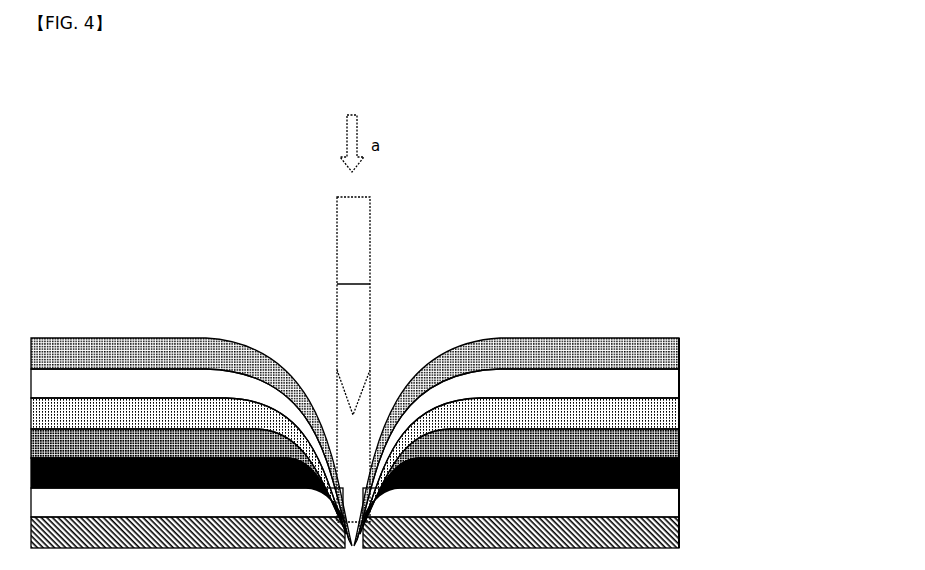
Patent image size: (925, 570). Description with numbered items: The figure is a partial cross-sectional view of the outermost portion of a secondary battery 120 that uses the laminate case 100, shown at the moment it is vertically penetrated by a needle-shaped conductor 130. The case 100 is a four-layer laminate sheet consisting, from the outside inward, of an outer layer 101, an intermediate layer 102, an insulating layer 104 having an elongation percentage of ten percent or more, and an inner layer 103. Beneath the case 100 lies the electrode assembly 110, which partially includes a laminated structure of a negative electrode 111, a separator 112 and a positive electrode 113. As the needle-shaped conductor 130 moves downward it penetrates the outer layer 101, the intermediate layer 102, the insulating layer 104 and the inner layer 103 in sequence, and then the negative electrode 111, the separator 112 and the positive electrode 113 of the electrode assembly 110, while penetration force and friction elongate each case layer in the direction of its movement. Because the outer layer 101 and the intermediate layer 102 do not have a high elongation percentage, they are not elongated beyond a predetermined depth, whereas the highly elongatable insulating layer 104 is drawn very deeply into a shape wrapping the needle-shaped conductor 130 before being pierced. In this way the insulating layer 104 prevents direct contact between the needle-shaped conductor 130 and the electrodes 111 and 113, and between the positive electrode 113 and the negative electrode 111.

The case 100 is at (432, 442).
The outer layer 101 is at (672, 358).
The intermediate layer 102 is at (672, 383).
The inner layer 103 is at (406, 478).
The insulating layer 104 is at (672, 410).
The electrode assembly 110 is at (432, 503).
The negative electrode 111 is at (680, 480).
The separator 112 is at (672, 505).
The positive electrode 113 is at (406, 532).
The secondary battery 120 is at (615, 326).
The needle-shaped conductor 130 is at (371, 263).